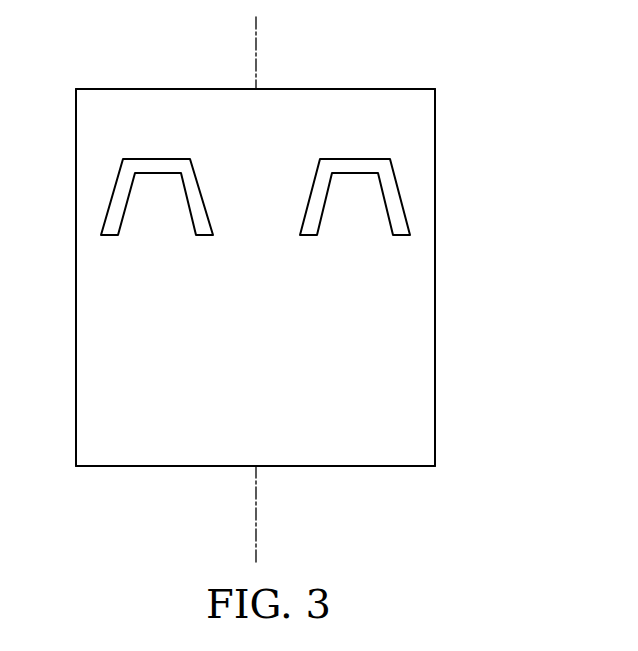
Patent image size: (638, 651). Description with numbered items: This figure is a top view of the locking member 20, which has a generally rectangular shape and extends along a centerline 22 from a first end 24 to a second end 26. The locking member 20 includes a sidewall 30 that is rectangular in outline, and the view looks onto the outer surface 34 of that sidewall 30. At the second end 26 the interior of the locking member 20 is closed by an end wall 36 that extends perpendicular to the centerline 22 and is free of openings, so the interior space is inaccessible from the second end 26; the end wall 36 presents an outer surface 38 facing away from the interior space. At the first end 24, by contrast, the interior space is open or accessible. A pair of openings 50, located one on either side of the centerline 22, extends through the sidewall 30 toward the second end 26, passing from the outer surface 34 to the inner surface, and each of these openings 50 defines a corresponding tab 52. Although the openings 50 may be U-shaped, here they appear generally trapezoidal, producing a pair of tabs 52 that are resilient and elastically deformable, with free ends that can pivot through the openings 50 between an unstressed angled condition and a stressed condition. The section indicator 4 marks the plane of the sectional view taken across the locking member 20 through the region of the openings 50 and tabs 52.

The section line of FIG. 4 is at (165, 89).
The locking member 20 is at (420, 478).
The centerline 22 is at (257, 537).
The first end 24 is at (445, 462).
The second end 26 is at (455, 105).
The sidewall 30 is at (436, 278).
The outer surface 34 is at (354, 400).
The end wall 36 is at (331, 89).
The outer surface 38 is at (389, 89).
The openings 50 is at (146, 160).
The tabs 52 is at (157, 205).